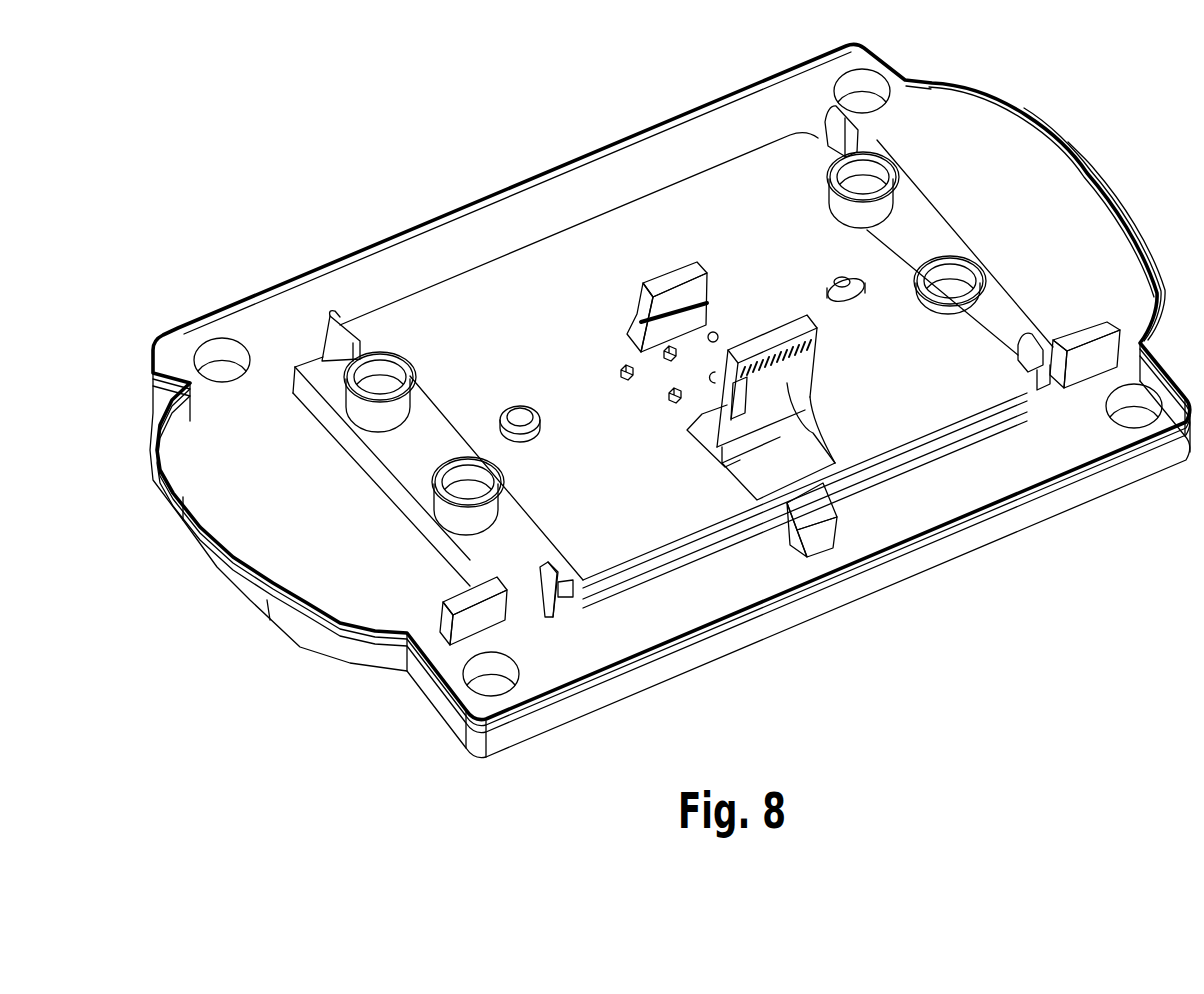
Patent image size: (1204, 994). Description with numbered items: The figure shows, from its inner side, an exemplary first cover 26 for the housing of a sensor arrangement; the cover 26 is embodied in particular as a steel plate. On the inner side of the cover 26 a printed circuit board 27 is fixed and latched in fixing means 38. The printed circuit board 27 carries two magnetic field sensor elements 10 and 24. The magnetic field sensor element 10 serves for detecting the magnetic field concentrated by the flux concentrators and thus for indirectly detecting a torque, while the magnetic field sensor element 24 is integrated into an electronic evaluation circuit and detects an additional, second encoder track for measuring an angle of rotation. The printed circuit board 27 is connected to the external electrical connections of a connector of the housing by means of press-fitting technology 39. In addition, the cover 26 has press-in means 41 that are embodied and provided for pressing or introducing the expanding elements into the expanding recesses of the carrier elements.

The magnetic field sensor element 10 is at (667, 273).
The magnetic field sensor element 24 is at (787, 390).
The first cover 26 is at (1007, 574).
The printed circuit board 27 is at (733, 183).
The fixing means 38 is at (333, 345).
The press-fitting technology 39 is at (670, 360).
The press-in means 41 is at (877, 170).